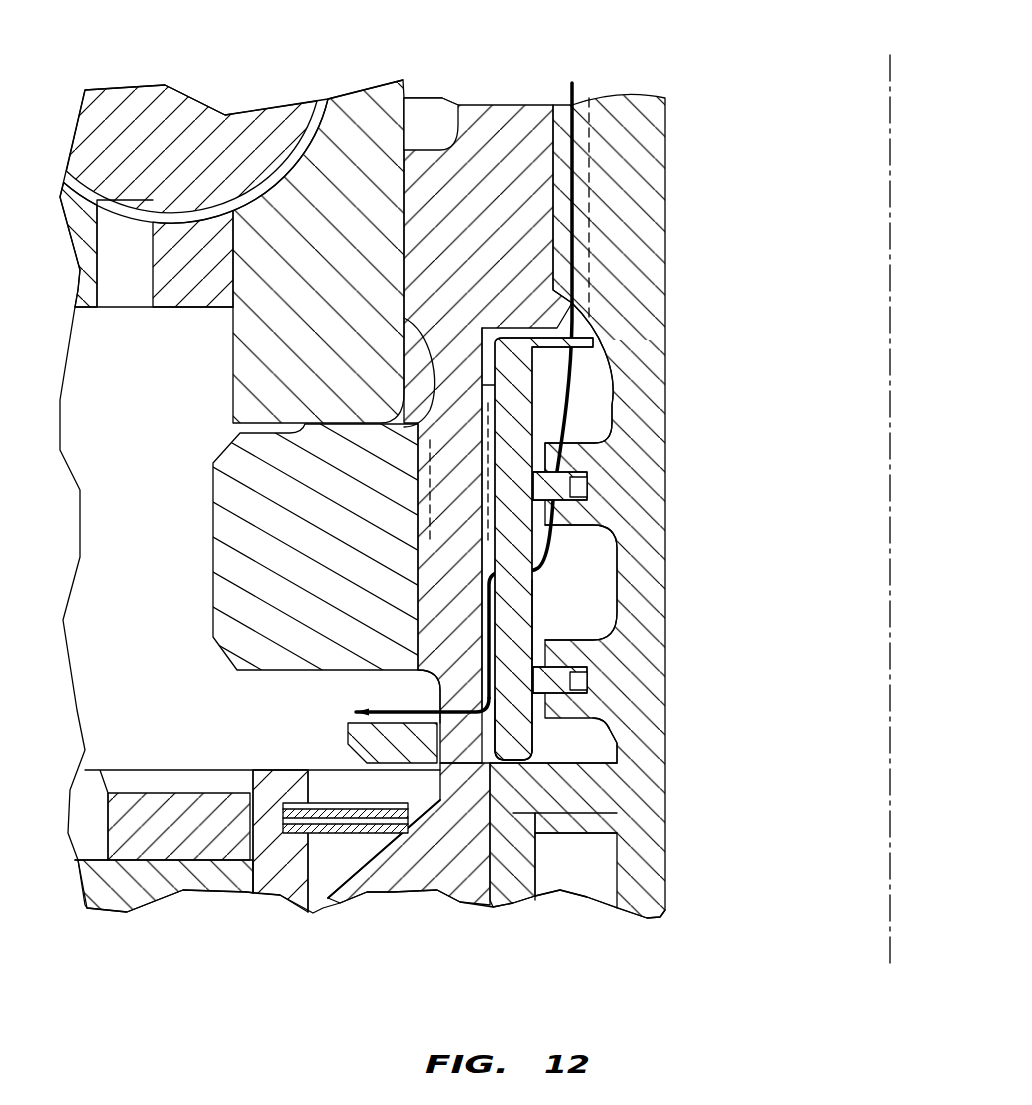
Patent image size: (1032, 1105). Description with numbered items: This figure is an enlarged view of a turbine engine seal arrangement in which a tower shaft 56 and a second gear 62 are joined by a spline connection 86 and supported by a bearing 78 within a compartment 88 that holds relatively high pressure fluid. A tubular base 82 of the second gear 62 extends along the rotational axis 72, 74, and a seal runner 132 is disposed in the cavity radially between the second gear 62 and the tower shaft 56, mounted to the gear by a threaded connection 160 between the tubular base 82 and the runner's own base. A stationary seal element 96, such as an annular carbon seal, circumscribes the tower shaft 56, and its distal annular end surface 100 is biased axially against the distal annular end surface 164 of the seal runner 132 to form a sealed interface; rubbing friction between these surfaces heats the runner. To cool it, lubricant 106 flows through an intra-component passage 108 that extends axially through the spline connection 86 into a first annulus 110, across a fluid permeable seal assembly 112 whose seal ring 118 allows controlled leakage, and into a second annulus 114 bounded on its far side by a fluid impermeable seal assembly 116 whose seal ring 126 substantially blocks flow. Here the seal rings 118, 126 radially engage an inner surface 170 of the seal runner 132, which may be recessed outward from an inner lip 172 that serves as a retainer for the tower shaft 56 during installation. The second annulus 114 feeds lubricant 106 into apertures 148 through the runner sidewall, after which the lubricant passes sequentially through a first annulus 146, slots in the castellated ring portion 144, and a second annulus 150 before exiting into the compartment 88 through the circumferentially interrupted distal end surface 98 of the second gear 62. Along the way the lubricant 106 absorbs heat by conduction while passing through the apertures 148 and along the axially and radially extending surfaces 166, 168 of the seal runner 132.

The tower shaft 56 is at (636, 99).
The second gear 62 is at (488, 382).
The tubular base 82 is at (503, 105).
The rotational axis 72 is at (819, 511).
The rotational axis 74 is at (888, 60).
The bearing 78 is at (148, 102).
The spline connection 86 is at (561, 103).
The compartment 88 is at (142, 672).
The seal element 96 is at (370, 881).
The distal end surface 98 is at (472, 765).
The distal annular end surface 100 is at (498, 718).
The lubricant 106 is at (647, 387).
The intra-component passage 108 is at (588, 606).
The first annulus 110 is at (604, 397).
The fluid permeable seal assembly 112 is at (606, 483).
The second annulus 114 is at (644, 591).
The fluid impermeable seal assembly 116 is at (607, 688).
The seal ring 118 is at (490, 328).
The seal ring 126 is at (622, 722).
The seal runner 132 is at (347, 737).
The ring portion 144 is at (358, 526).
The first annulus 146 is at (358, 526).
The apertures 148 is at (517, 557).
The second annulus 150 is at (576, 856).
The threaded connection 160 is at (528, 549).
The distal annular end surface 164 is at (408, 765).
The axially extending surface 166 is at (416, 668).
The radially extending surface 168 is at (352, 656).
The inner surface 170 is at (533, 590).
The inner lip 172 is at (515, 705).